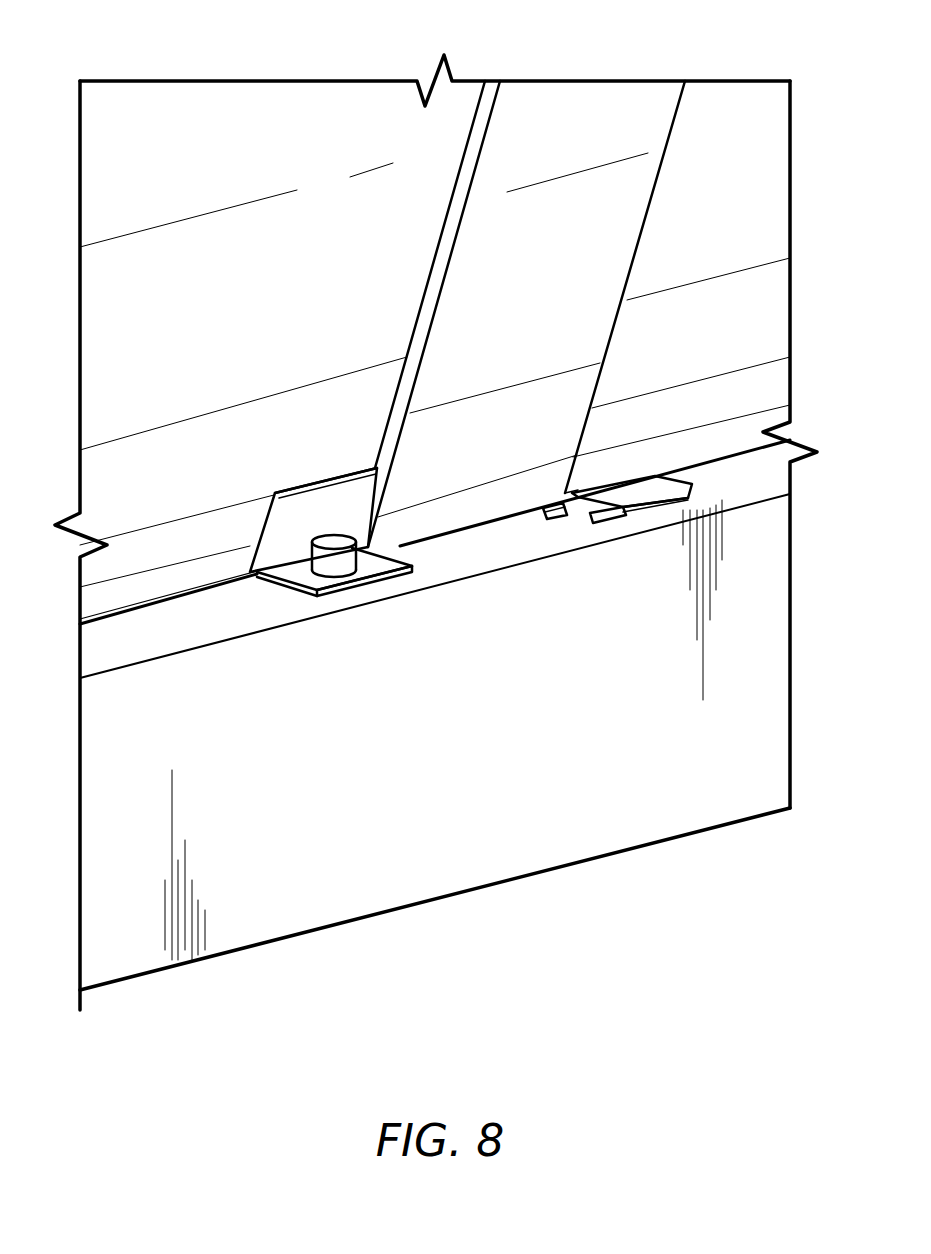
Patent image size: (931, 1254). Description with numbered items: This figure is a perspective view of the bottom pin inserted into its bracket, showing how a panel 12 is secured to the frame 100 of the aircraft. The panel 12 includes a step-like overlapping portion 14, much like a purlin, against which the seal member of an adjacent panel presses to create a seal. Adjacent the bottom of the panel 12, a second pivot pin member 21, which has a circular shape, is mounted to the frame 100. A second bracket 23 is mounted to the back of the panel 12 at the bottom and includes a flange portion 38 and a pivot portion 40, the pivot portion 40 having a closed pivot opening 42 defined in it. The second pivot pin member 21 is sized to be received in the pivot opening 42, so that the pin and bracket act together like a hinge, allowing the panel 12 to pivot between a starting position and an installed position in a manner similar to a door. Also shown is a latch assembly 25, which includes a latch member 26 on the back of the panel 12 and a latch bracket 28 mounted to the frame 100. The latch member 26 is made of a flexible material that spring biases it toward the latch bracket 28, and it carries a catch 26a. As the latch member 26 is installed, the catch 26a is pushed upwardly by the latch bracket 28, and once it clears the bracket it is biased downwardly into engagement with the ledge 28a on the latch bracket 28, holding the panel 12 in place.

The panel 12 is at (233, 105).
The overlapping portion 14 is at (582, 105).
The second pivot pin member 21 is at (333, 538).
The second bracket 23 is at (255, 555).
The flange portion 38 is at (290, 520).
The pivot portion 40 is at (300, 580).
The pivot opening 42 is at (363, 565).
The latch assembly 25 is at (636, 452).
The latch bracket 28 is at (655, 480).
The latch member 26 is at (593, 503).
The catch 26a is at (612, 515).
The ledge 28a is at (640, 507).
The frame 100 is at (485, 797).